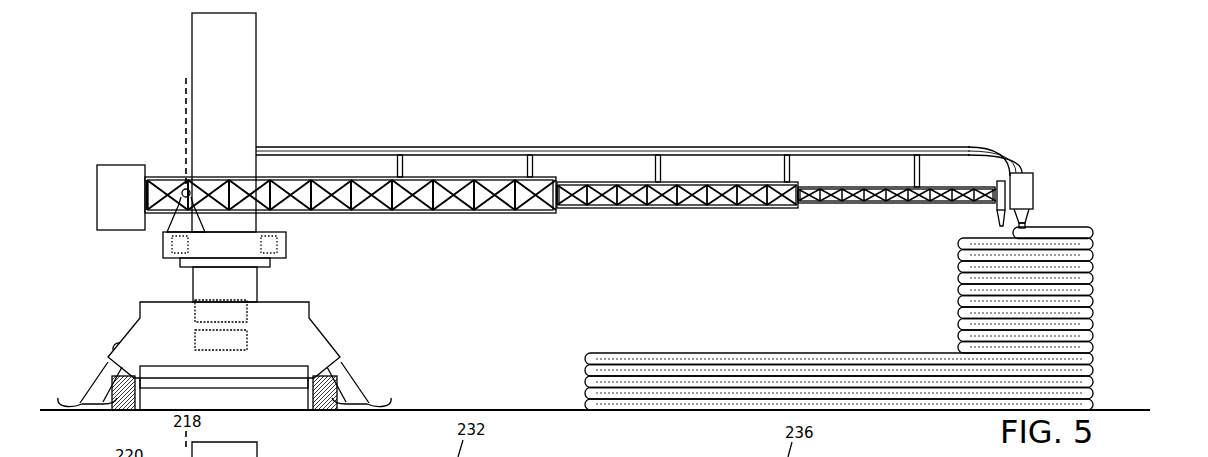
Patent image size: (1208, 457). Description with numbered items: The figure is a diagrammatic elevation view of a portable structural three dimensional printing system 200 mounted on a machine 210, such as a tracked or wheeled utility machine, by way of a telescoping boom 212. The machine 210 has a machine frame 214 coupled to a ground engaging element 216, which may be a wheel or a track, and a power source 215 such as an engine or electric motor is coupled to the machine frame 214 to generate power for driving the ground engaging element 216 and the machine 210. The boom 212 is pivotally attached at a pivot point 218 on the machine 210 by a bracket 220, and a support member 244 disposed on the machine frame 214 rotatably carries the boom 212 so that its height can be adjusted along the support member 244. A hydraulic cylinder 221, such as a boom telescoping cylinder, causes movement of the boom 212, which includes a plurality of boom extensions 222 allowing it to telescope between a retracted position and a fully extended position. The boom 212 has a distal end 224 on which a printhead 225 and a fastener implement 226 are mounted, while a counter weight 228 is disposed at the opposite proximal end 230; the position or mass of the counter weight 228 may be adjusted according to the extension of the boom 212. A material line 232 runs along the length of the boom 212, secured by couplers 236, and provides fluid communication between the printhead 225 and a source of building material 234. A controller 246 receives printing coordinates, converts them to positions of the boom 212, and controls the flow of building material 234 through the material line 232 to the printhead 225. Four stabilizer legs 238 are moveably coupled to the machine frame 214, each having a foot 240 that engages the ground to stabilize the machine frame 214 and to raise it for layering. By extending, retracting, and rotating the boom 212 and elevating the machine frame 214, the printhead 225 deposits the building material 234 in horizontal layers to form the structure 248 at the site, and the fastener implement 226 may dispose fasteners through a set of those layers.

The printing system 200 is at (596, 107).
The machine 210 is at (130, 309).
The boom 212 is at (407, 222).
The machine frame 214 is at (237, 385).
The power source 215 is at (236, 320).
The ground engaging element 216 is at (114, 345).
The pivot point 218 is at (209, 122).
The bracket 220 is at (182, 190).
The hydraulic cylinder 221 is at (244, 244).
The boom extensions 222 is at (575, 212).
The distal end 224 is at (1048, 200).
The printhead 225 is at (1037, 182).
The fastener implement 226 is at (995, 215).
The counter weight 228 is at (136, 193).
The proximal end 230 is at (88, 194).
The material line 232 is at (456, 147).
The source of building material 234 is at (163, 255).
The couplers 236 is at (788, 147).
The stabilizer legs 238 is at (351, 383).
The foot 240 is at (393, 403).
The support member 244 is at (253, 287).
The controller 246 is at (236, 349).
The structure 248 is at (1108, 310).